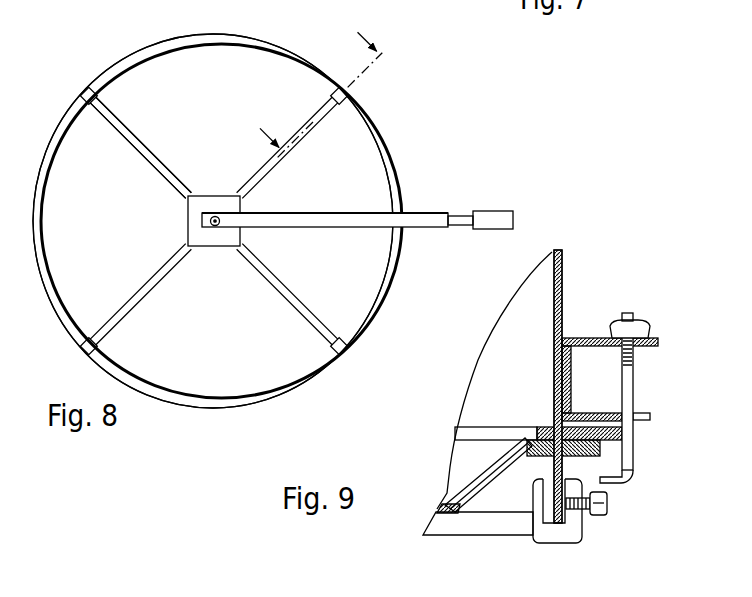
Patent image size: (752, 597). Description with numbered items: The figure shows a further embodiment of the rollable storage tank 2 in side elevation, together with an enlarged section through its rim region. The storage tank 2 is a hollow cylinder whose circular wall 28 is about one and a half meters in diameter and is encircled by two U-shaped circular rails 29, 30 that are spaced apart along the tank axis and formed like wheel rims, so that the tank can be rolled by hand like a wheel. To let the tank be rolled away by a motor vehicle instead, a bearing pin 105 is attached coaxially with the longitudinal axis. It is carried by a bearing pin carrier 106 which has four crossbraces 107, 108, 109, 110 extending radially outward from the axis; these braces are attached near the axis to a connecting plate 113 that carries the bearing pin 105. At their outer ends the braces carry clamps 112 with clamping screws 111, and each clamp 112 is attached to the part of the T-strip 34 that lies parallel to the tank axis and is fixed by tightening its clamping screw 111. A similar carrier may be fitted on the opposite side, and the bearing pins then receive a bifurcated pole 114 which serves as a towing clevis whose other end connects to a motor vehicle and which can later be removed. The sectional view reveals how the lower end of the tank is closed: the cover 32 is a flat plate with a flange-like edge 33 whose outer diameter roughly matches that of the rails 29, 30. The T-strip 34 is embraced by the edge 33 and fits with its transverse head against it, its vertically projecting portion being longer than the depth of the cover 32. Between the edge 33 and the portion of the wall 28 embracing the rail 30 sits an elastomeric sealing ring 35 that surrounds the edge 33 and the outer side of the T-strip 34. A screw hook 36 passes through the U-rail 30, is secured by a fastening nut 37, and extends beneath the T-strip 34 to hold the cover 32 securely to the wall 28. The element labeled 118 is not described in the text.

In FIG. 8, the storage tank 2 is at (235, 29).
In FIG. 9, the wall 28 is at (559, 272).
In FIG. 8, the U-shaped circular rail 29 is at (270, 47).
In FIG. 8, the U-shaped circular rail 30 is at (270, 47).
In FIG. 9, the U-shaped circular rail 30 is at (588, 337).
In FIG. 8, the cover 32 is at (160, 68).
In FIG. 9, the cover 32 is at (451, 503).
In FIG. 9, the flange-like edge 33 is at (533, 426).
In FIG. 8, the T-strip 34 is at (191, 38).
In FIG. 9, the T-strip 34 is at (557, 463).
In FIG. 9, the sealing ring 35 is at (546, 426).
In FIG. 9, the screw hook 36 is at (626, 385).
In FIG. 9, the fastening nut 37 is at (647, 320).
In FIG. 8, the bearing pin 105 is at (216, 228).
In FIG. 8, the bearing pin carrier 106 is at (117, 145).
In FIG. 8, the crossbrace 107 is at (132, 138).
In FIG. 8, the crossbrace 108 is at (267, 170).
In FIG. 9, the crossbrace 108 is at (440, 525).
In FIG. 8, the crossbrace 109 is at (108, 329).
In FIG. 8, the crossbrace 110 is at (330, 329).
In FIG. 9, the clamping screw 111 is at (609, 504).
In FIG. 9, the clamp 112 is at (567, 534).
In FIG. 8, the connecting plate 113 is at (195, 225).
In FIG. 8, the bifurcated pole 114 is at (425, 214).
In FIG. 8, the end block 118 is at (86, 91).